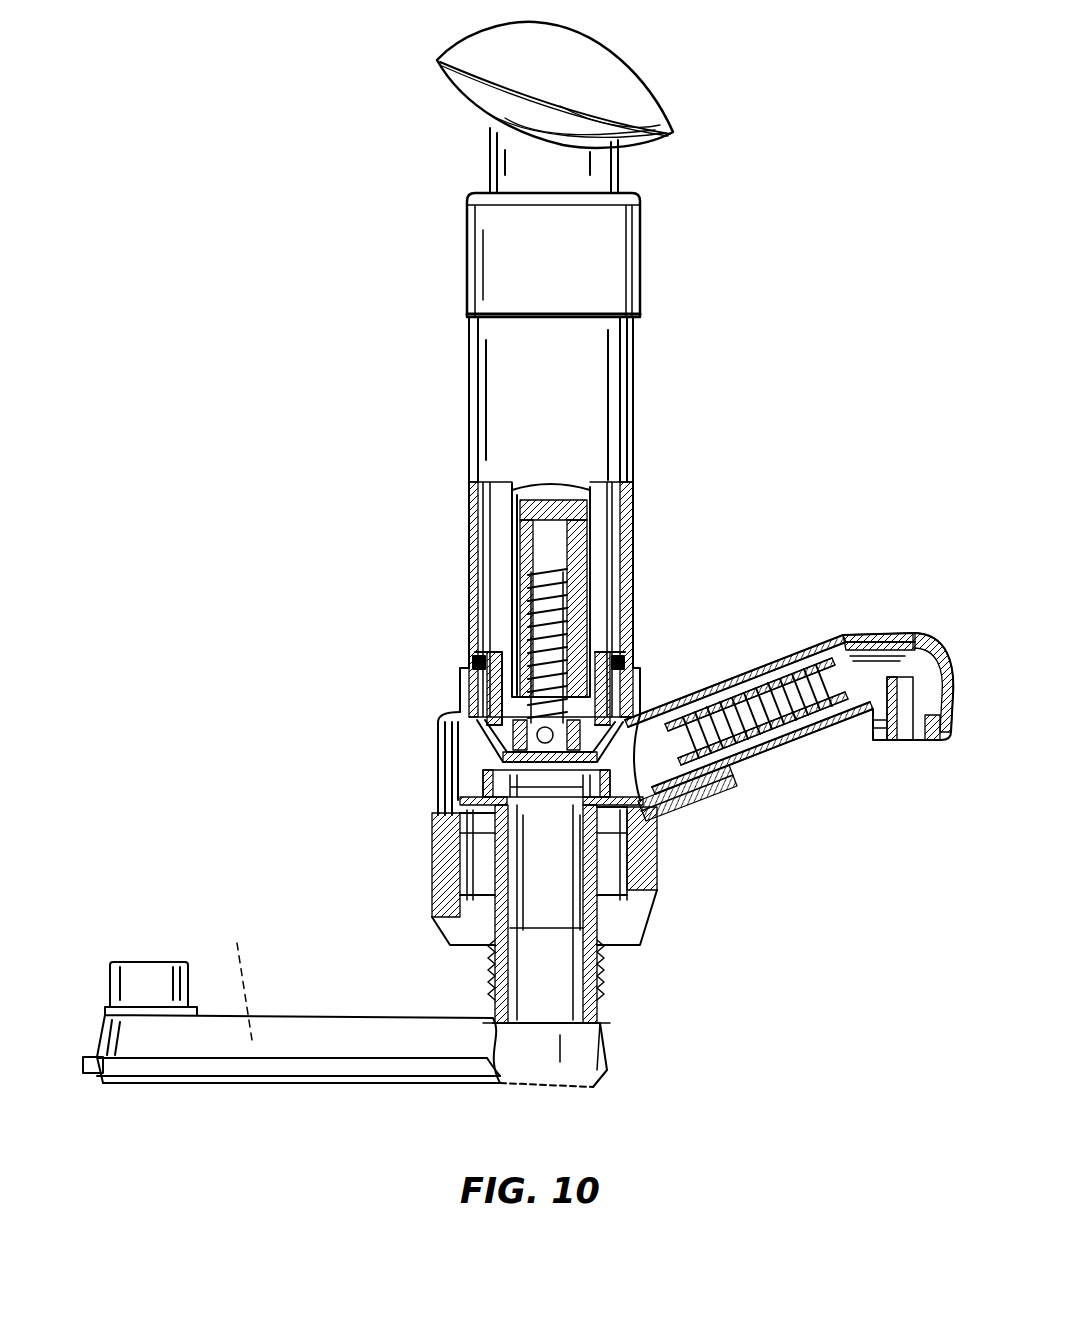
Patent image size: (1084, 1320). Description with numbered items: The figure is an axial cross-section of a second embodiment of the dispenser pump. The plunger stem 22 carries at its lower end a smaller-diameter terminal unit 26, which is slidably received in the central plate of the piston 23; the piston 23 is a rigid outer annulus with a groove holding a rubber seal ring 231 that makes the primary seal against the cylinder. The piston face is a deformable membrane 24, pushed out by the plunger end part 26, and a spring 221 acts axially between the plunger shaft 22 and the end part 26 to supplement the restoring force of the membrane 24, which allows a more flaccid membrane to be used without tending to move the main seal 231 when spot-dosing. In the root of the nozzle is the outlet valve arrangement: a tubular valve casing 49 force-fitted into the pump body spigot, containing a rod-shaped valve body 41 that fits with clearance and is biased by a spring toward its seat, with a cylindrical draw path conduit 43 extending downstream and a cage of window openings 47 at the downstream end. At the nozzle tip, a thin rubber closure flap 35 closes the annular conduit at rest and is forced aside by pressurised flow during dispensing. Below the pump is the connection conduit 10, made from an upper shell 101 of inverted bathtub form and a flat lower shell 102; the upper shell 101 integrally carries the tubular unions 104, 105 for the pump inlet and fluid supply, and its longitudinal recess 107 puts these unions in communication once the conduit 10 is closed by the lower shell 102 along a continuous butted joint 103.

The connection conduit 10 is at (527, 1088).
The plunger stem 22 is at (557, 500).
The spring 221 is at (570, 622).
The piston 23 is at (482, 707).
The seal ring 231 is at (470, 662).
The membrane 24 is at (498, 760).
The terminal unit 26 is at (547, 732).
The closure flap 35 is at (873, 742).
The valve body 41 is at (717, 750).
The draw path conduit 43 is at (703, 690).
The window openings 47 is at (777, 680).
The valve casing 49 is at (780, 743).
The upper shell 101 is at (313, 1015).
The lower shell 102 is at (507, 1080).
The butted joint 103 is at (593, 1027).
The tubular union 104 is at (500, 1003).
The tubular union 105 is at (150, 983).
The longitudinal recess 107 is at (249, 971).